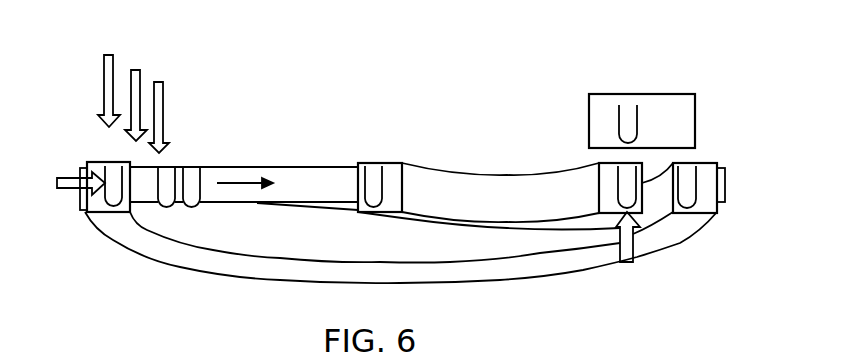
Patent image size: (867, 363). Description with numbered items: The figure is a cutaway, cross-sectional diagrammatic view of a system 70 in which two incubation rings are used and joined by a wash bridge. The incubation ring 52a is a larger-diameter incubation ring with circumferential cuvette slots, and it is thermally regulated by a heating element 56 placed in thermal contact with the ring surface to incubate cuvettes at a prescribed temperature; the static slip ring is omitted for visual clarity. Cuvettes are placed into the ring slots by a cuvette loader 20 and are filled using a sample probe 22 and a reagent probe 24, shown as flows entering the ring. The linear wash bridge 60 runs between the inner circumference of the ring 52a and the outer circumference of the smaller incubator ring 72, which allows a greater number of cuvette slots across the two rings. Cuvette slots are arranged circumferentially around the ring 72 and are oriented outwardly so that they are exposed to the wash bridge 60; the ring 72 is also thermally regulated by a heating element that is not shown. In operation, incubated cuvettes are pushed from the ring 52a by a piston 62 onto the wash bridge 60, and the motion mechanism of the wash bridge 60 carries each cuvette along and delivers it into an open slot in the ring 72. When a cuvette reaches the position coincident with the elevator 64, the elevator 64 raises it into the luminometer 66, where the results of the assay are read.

The cuvette loader 20 is at (110, 80).
The sample probe 22 is at (138, 95).
The reagent probe 24 is at (164, 107).
The incubation ring 52a is at (697, 162).
The heating element 56 is at (725, 174).
The wash bridge 60 is at (272, 185).
The piston 62 is at (72, 180).
The elevator 64 is at (633, 262).
The luminometer 66 is at (642, 121).
The system 70 is at (500, 136).
The incubator ring 72 is at (500, 203).